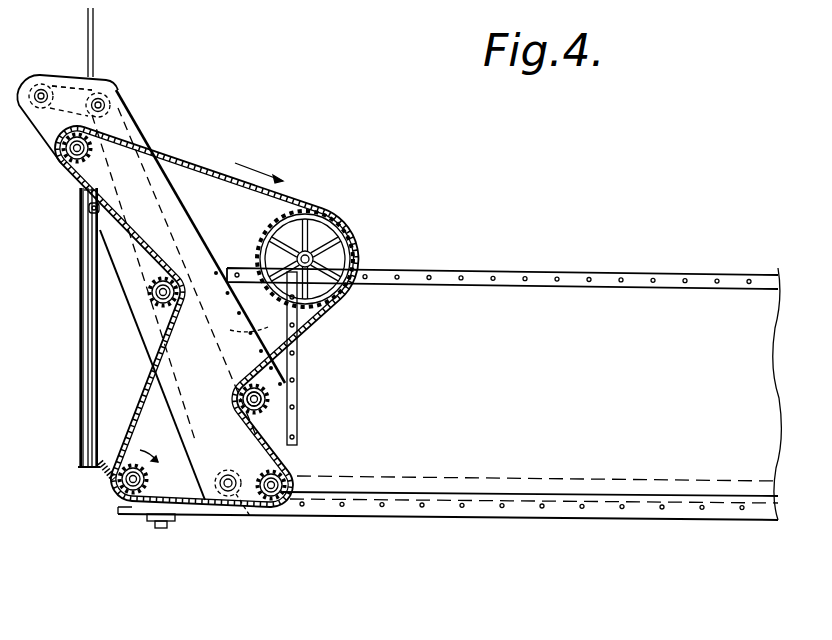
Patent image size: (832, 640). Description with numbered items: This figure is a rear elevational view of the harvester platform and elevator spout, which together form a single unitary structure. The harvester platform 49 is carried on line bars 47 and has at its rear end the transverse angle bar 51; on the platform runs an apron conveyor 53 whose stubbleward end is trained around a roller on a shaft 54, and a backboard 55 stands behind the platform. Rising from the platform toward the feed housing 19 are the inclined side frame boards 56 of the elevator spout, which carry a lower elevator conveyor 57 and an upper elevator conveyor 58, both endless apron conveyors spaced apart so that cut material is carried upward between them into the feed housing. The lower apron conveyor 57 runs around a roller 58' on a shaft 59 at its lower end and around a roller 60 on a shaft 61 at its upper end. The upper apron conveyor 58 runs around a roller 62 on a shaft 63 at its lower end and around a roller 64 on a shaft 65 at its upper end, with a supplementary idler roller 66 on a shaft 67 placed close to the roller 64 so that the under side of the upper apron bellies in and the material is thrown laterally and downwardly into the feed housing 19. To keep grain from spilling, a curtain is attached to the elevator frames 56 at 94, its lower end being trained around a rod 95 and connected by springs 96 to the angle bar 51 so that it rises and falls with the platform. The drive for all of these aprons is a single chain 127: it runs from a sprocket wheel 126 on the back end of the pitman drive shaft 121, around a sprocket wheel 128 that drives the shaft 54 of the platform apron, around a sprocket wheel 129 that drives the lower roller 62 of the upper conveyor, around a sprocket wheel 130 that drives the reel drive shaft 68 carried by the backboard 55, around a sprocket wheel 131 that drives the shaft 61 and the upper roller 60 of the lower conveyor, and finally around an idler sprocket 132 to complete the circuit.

The feed housing 19 is at (92, 42).
The roller 64 is at (40, 80).
The shaft 65 is at (46, 92).
The supplementary idler roller 66 is at (107, 103).
The shaft 67 is at (110, 90).
The side frame boards 56 is at (200, 240).
The lower elevator conveyor 57 is at (180, 408).
The curtain connection point 94 is at (88, 212).
The rod 95 is at (82, 407).
The sprocket wheel 131 is at (88, 172).
The roller 60 is at (83, 192).
The springs 96 is at (103, 474).
The sprocket wheel 130 is at (283, 208).
The reel drive shaft 68 is at (342, 228).
The shaft 61 is at (58, 152).
The idler sprocket 132 is at (157, 305).
The shaft 63 is at (277, 400).
The sprocket wheel 129 is at (277, 412).
The sprocket wheel 128 is at (277, 497).
The shaft 54 is at (275, 483).
The sprocket wheel 126 is at (152, 480).
The pitman drive shaft 121 is at (134, 484).
The line bars 47 is at (163, 528).
The chain 127 is at (197, 500).
The shaft 59 is at (227, 492).
The roller 58' is at (263, 533).
The upper elevator conveyor 58 is at (259, 315).
The roller 62 is at (293, 378).
The backboard 55 is at (522, 298).
The apron conveyor 53 is at (523, 467).
The harvester platform 49 is at (613, 522).
The transverse angle bar 51 is at (490, 510).